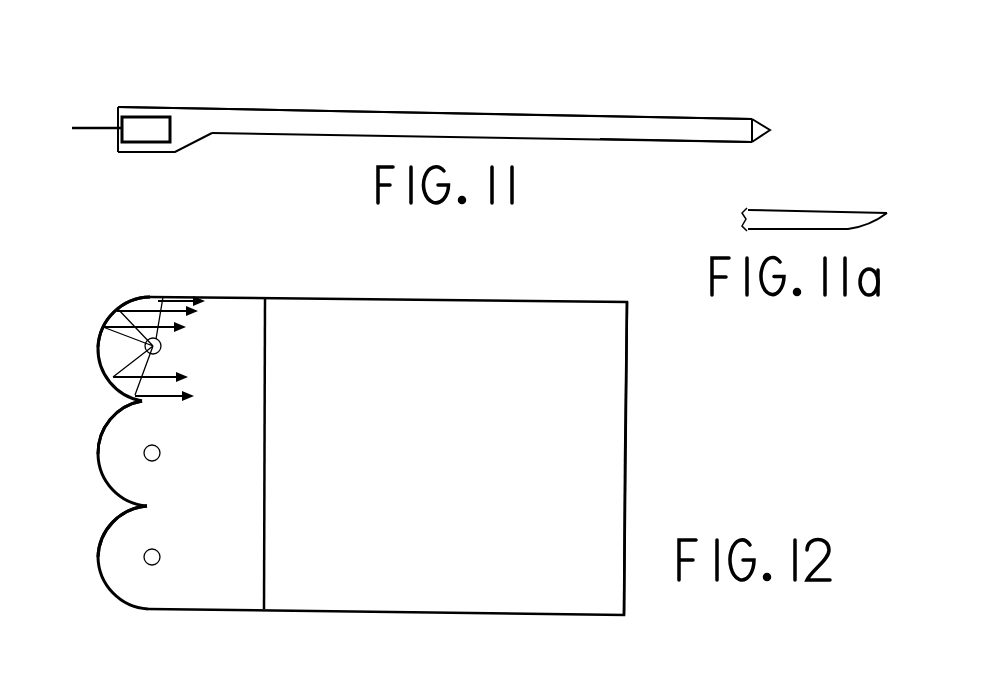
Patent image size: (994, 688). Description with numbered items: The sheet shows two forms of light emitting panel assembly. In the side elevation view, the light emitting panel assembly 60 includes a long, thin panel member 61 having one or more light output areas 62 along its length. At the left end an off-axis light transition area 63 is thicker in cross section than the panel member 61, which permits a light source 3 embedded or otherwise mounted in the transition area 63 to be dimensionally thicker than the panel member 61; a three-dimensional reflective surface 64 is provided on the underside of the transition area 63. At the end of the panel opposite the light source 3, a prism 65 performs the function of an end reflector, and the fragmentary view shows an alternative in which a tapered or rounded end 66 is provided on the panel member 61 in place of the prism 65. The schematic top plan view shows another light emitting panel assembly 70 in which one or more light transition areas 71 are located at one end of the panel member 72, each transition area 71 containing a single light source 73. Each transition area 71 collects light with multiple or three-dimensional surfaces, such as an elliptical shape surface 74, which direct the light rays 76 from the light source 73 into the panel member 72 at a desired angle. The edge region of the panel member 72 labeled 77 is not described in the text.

In FIG. 11, the light source 3 is at (150, 126).
In FIG. 11, the light emitting panel assembly 60 is at (425, 128).
In FIG. 11, the panel member 61 is at (635, 125).
In FIG. 11A, the panel member 61 is at (825, 215).
In FIG. 11, the light output area 62 is at (582, 113).
In FIG. 11, the off-axis light transition area 63 is at (188, 115).
In FIG. 11, the three-dimensional reflective surface 64 is at (192, 147).
In FIG. 11, the prism 65 is at (756, 118).
In FIG. 11A, the tapered or rounded end 66 is at (870, 226).
In FIG. 12, the light emitting panel assembly 70 is at (494, 288).
In FIG. 12, the light transition area 71 is at (112, 356).
In FIG. 12, the panel member 72 is at (610, 393).
In FIG. 12, the light source 73 is at (163, 348).
In FIG. 12, the elliptical shape surface 74 is at (98, 332).
In FIG. 12, the light rays 76 is at (163, 297).
In FIG. 12, the panel output edge 77 is at (628, 467).